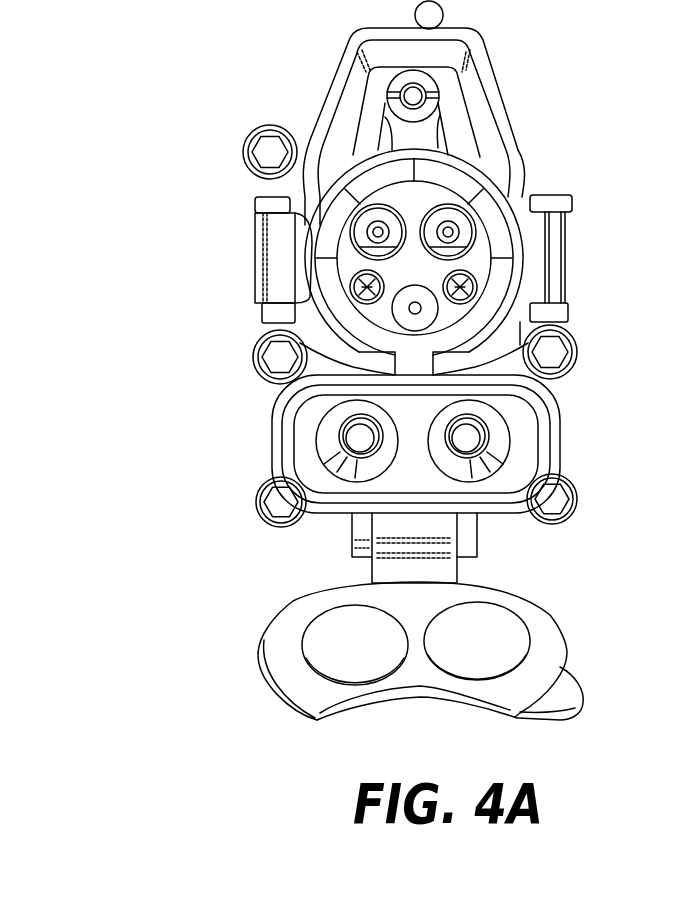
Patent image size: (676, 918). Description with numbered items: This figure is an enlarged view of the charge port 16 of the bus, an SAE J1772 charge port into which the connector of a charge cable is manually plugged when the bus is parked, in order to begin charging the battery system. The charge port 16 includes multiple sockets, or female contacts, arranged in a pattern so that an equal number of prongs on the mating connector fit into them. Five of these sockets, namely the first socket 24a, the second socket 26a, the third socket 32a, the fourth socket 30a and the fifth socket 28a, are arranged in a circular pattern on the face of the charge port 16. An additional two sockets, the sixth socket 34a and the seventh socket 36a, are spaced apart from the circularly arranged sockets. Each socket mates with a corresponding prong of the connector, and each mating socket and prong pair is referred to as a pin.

The charge port 16 is at (168, 151).
The first socket 24a is at (449, 230).
The second socket 26a is at (378, 232).
The fifth socket 28a is at (463, 282).
The fourth socket 30a is at (415, 308).
The third socket 32a is at (367, 287).
The sixth socket 34a is at (480, 430).
The seventh socket 36a is at (355, 437).